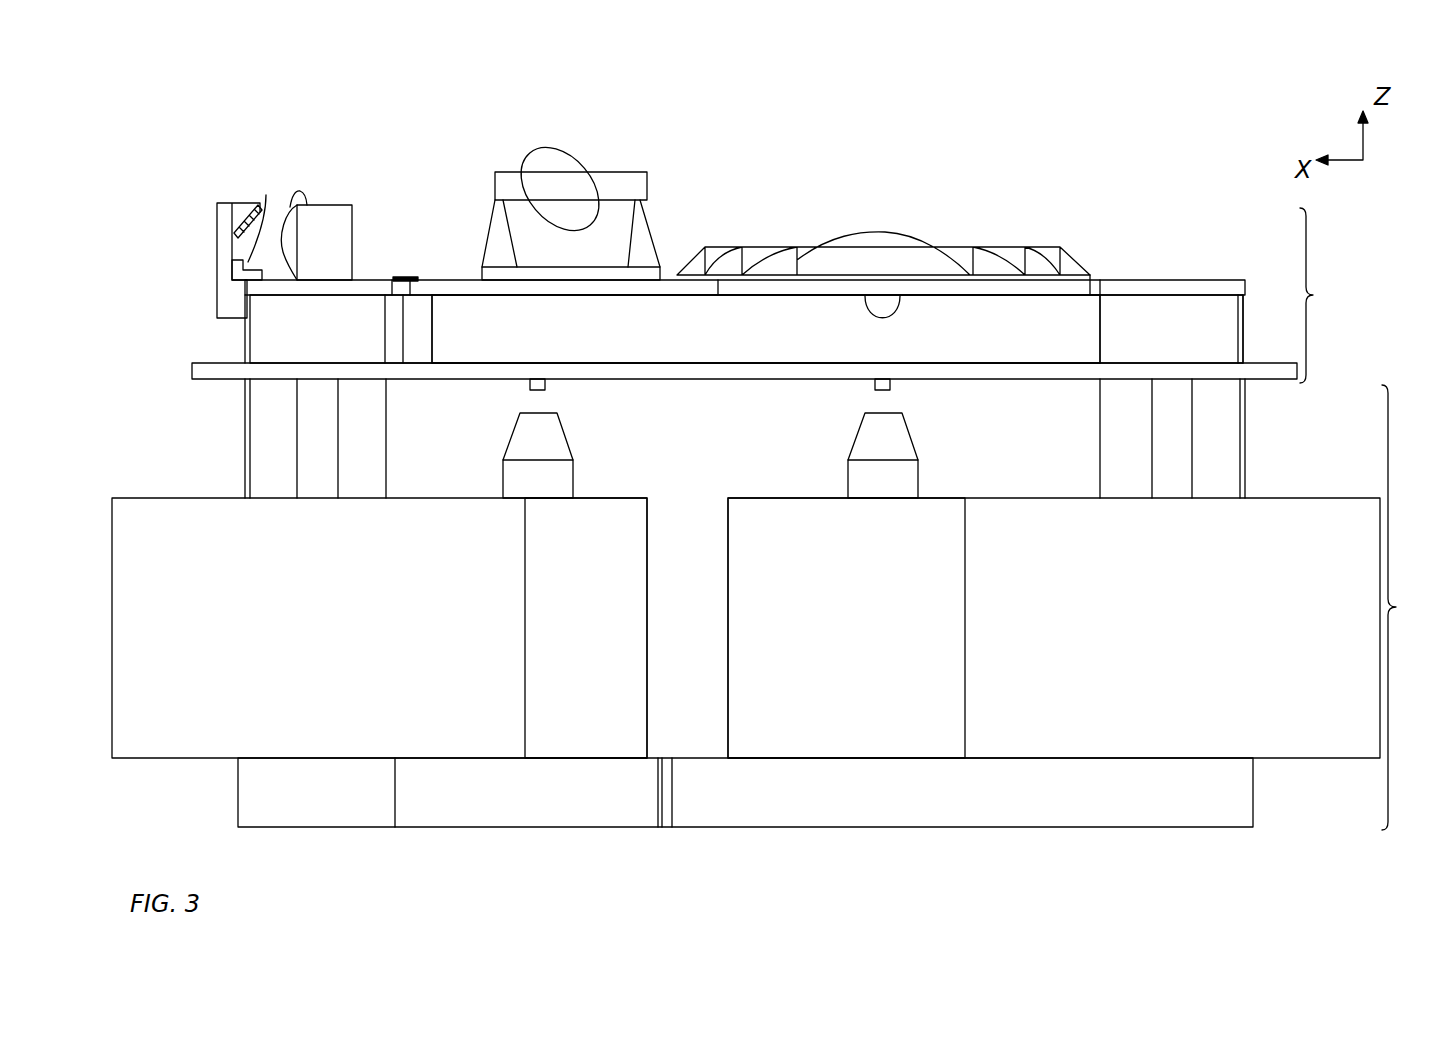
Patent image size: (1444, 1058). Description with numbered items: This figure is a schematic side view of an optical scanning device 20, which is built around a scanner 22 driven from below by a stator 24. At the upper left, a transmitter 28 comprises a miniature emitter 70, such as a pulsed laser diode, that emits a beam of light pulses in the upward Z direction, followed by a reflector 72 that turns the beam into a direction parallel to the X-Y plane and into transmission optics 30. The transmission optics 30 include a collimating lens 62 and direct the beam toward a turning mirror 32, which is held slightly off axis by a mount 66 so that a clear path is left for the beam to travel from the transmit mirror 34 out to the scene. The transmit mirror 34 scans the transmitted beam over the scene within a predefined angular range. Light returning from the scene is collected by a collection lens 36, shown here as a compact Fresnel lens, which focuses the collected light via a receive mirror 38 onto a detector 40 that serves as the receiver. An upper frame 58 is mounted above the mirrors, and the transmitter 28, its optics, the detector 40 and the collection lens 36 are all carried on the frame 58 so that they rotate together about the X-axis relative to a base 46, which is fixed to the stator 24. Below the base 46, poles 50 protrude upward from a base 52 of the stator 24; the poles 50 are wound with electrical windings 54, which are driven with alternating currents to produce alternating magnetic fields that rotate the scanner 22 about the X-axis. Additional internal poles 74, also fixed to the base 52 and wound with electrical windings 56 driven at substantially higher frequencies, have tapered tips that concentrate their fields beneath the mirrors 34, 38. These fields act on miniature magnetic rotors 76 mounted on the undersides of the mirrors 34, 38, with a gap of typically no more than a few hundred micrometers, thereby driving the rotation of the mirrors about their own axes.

The optical scanning device 20 is at (155, 124).
The scanner 22 is at (1324, 295).
The stator 24 is at (1406, 607).
The transmitter 28 is at (216, 292).
The transmission optics 30 is at (346, 205).
The turning mirror 32 is at (548, 150).
The transmit mirror 34 is at (572, 362).
The collection lens 36 is at (1088, 272).
The receive mirror 38 is at (997, 362).
The detector 40 is at (868, 316).
The base 46 is at (1268, 380).
The poles 50 is at (268, 434).
The base of stator 52 is at (1190, 812).
The electrical windings 54 is at (140, 742).
The electrical windings 56 is at (590, 742).
The upper frame 58 is at (1226, 280).
The collimating lens 62 is at (300, 190).
The mount 66 is at (625, 172).
The miniature emitter 70 is at (266, 195).
The reflector 72 is at (243, 203).
The internal poles 74 is at (573, 472).
The miniature magnetic rotors 76 is at (546, 385).